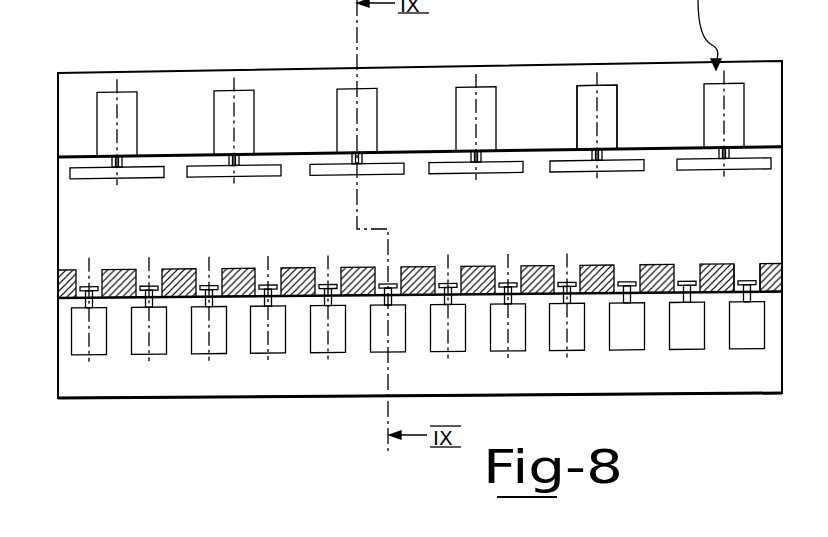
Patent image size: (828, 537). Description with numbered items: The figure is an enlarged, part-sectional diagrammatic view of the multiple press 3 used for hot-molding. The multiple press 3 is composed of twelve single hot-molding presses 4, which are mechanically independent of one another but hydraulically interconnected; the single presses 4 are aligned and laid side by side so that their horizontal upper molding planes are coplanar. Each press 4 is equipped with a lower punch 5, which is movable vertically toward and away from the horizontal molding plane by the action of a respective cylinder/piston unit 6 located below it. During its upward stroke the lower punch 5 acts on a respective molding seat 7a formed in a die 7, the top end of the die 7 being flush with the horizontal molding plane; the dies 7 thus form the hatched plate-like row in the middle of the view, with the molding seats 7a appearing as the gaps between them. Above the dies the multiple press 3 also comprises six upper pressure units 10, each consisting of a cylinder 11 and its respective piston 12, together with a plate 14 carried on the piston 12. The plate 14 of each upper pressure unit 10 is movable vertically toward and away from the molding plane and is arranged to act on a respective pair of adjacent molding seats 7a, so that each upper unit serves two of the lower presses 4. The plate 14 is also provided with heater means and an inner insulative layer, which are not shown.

The multiple press 3 is at (193, 423).
The single hot-molding press 4 is at (682, 359).
The lower punch 5 is at (687, 283).
The cylinder/piston unit 6 is at (697, 340).
The die 7 is at (770, 263).
The molding seat 7a is at (740, 263).
The upper pressure unit 10 is at (589, 84).
The cylinder 11 is at (604, 92).
The piston 12 is at (603, 158).
The plate 14 is at (622, 183).